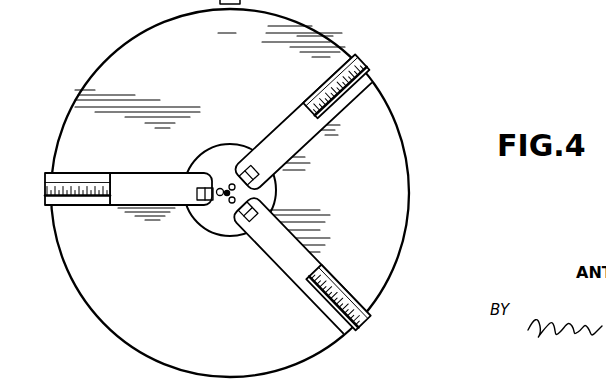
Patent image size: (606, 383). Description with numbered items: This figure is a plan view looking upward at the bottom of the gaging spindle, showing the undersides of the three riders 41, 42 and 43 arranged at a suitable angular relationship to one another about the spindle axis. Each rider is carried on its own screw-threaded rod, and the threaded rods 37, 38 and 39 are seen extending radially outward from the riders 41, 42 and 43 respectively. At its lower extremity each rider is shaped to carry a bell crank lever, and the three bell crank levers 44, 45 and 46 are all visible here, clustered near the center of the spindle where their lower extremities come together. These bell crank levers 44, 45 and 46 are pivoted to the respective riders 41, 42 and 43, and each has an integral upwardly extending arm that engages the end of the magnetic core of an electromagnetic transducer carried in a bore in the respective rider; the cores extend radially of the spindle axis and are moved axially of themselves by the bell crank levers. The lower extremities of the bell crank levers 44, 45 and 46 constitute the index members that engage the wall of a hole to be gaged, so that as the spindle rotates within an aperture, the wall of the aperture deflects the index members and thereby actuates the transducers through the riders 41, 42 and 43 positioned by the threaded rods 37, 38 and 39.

The threaded rod 37 is at (47, 186).
The threaded rod 38 is at (358, 322).
The threaded rod 39 is at (361, 61).
The rider 41 is at (147, 180).
The rider 42 is at (288, 242).
The rider 43 is at (282, 120).
The bell crank lever 44 is at (217, 198).
The bell crank lever 45 is at (232, 204).
The bell crank lever 46 is at (236, 182).